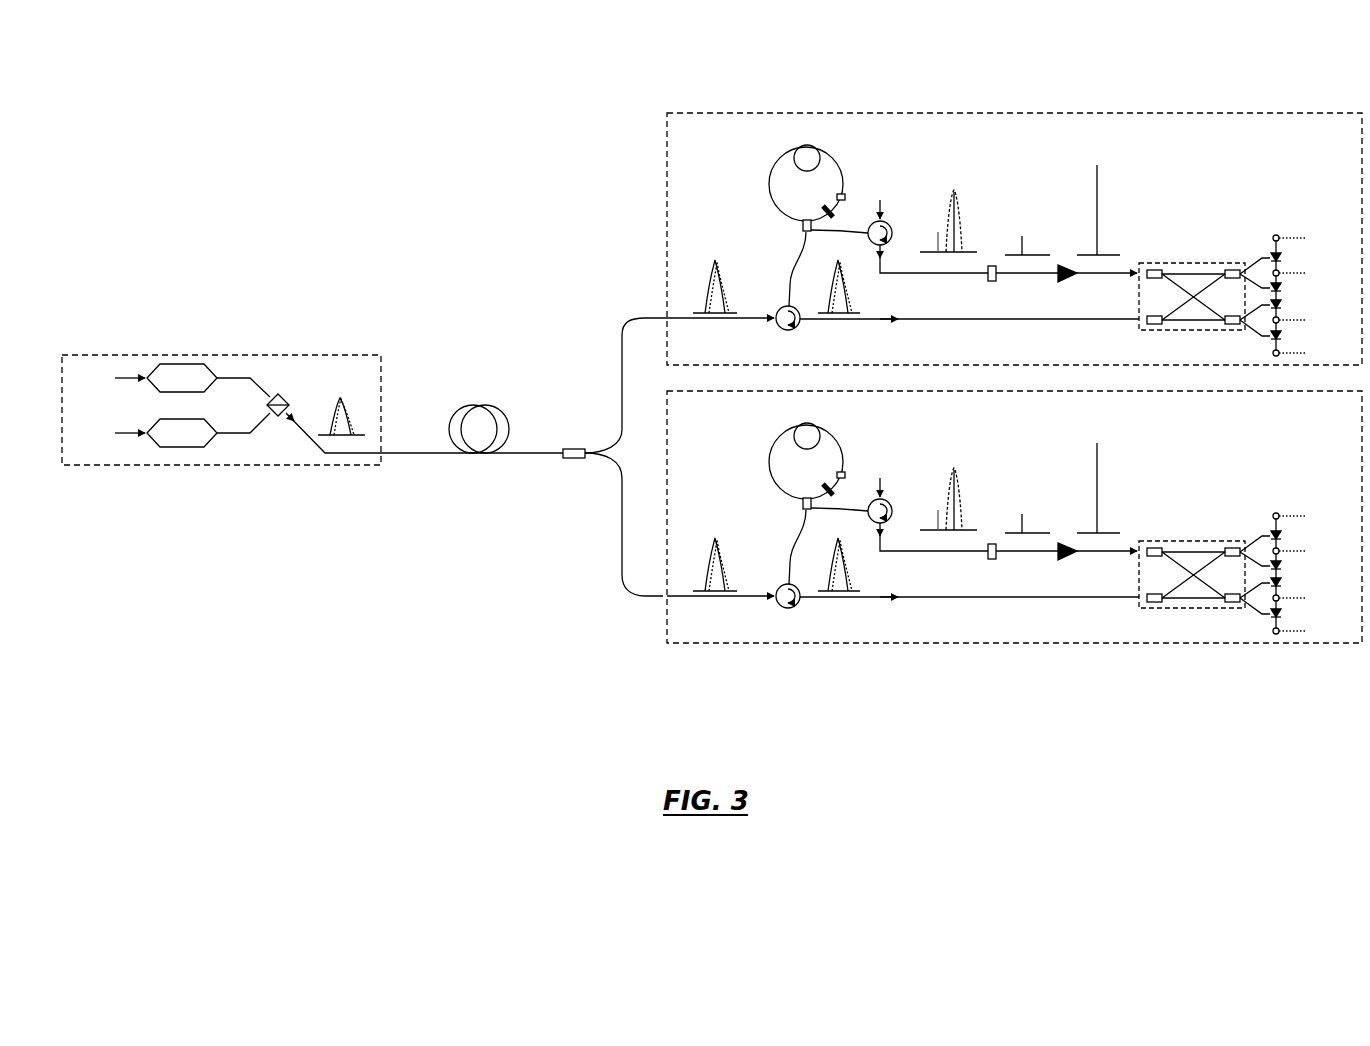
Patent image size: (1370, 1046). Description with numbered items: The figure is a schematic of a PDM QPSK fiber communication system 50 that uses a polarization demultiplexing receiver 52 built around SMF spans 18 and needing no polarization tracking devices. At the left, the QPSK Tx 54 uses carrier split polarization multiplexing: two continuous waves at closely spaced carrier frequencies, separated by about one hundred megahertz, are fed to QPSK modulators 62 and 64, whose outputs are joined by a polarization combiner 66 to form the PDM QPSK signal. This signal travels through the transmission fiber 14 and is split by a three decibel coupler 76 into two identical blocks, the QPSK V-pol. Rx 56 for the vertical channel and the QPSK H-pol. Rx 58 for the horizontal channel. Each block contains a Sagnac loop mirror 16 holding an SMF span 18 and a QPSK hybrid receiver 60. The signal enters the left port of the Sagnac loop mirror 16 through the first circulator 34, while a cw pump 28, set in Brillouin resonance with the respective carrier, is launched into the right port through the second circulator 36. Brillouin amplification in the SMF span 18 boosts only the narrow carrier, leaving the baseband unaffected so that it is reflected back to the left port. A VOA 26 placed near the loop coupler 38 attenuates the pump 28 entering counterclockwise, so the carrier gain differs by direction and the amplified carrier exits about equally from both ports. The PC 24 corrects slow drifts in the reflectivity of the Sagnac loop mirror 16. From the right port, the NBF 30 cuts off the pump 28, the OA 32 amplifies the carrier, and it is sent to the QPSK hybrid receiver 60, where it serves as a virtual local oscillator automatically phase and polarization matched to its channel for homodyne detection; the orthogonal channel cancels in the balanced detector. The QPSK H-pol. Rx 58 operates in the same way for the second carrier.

The transmission fiber 14 is at (485, 357).
The Sagnac loop mirror 16 is at (840, 139).
The SMF span 18 is at (830, 184).
The PC 24 is at (848, 181).
The VOA 26 is at (792, 183).
The pump 28 is at (915, 168).
The NBF 30 is at (994, 258).
The OA 32 is at (1068, 310).
The first circulator 34 is at (782, 305).
The second circulator 36 is at (910, 223).
The loop coupler 38 is at (803, 224).
The PDM QPSK fiber communication system 50 is at (750, 60).
The polarization demultiplexing receiver 52 is at (1023, 83).
The QPSK Tx 54 is at (312, 399).
The QPSK V-pol. Rx 56 is at (1250, 113).
The QPSK H-pol. Rx 58 is at (1260, 365).
The QPSK hybrid receiver 60 is at (1207, 232).
The QPSK modulator 62 is at (218, 356).
The QPSK modulator 64 is at (193, 447).
The polarization combiner 66 is at (283, 437).
The 3 dB coupler 76 is at (578, 433).